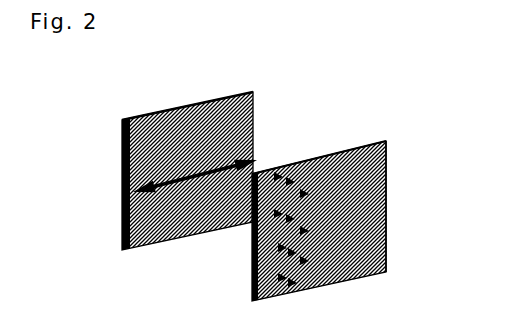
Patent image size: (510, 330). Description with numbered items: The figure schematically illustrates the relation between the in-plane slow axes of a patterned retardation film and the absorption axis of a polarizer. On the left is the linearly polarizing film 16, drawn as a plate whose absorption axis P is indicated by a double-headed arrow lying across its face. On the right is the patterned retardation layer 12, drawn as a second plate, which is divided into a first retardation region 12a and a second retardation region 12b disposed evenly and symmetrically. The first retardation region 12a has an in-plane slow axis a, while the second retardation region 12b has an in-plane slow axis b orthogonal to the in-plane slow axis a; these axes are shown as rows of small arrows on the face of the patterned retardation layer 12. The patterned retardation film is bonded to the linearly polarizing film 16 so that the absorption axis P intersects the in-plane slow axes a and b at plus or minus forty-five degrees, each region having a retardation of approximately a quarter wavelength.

The linearly polarizing film 16 is at (110, 136).
The patterned retardation layer 12 is at (247, 180).
The first retardation region 12a is at (373, 158).
The second retardation region 12b is at (387, 242).
The absorption axis p is at (207, 168).
The in-plane slow axis a is at (290, 171).
The in-plane slow axis b is at (307, 263).